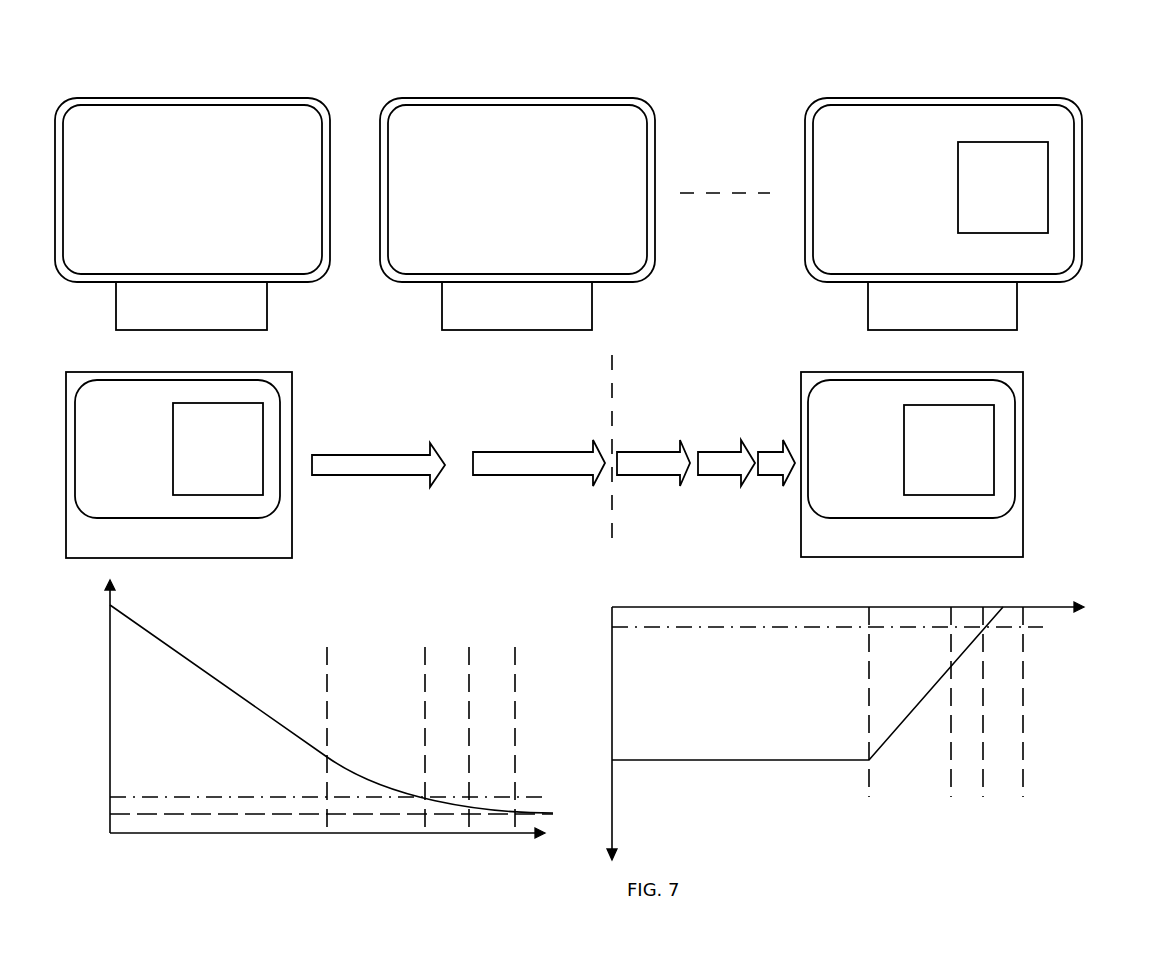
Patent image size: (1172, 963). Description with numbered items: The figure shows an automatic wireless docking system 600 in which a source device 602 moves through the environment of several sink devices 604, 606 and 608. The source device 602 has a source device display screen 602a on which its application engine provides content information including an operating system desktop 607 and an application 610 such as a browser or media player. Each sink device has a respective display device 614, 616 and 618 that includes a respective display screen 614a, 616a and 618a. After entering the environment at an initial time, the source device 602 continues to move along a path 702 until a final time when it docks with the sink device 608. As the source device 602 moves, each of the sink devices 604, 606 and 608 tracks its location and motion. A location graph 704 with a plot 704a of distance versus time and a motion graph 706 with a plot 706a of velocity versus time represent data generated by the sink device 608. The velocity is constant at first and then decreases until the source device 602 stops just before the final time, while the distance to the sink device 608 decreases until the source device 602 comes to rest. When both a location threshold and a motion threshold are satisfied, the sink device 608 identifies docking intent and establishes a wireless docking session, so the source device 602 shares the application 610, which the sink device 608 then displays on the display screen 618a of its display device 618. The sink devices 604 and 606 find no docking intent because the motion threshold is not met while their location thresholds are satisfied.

The automatic wireless docking system 600 is at (68, 79).
The source device 602 is at (544, 446).
The source device display screen 602a is at (277, 436).
The sink device 604 is at (217, 181).
The sink device 606 is at (546, 179).
The operating system desktop 607 is at (255, 397).
The sink device 608 is at (978, 182).
The application 610 is at (610, 318).
The display device 614 is at (283, 96).
The display screen 614a is at (313, 108).
The display device 616 is at (612, 97).
The display screen 616a is at (635, 108).
The display device 618 is at (1062, 101).
The display screen 618a is at (1074, 118).
The path 702 is at (465, 429).
The location graph 704 is at (325, 723).
The plot of distance versus time 704a is at (180, 657).
The motion graph 706 is at (812, 701).
The plot of velocity versus time 706a is at (745, 761).